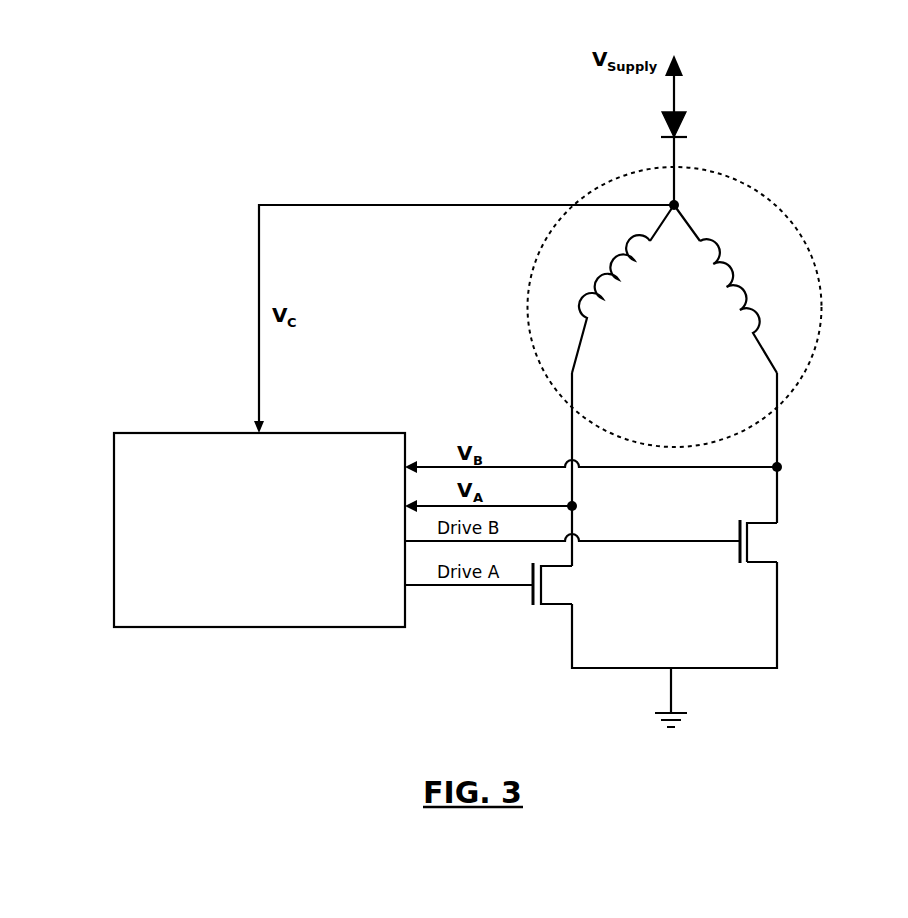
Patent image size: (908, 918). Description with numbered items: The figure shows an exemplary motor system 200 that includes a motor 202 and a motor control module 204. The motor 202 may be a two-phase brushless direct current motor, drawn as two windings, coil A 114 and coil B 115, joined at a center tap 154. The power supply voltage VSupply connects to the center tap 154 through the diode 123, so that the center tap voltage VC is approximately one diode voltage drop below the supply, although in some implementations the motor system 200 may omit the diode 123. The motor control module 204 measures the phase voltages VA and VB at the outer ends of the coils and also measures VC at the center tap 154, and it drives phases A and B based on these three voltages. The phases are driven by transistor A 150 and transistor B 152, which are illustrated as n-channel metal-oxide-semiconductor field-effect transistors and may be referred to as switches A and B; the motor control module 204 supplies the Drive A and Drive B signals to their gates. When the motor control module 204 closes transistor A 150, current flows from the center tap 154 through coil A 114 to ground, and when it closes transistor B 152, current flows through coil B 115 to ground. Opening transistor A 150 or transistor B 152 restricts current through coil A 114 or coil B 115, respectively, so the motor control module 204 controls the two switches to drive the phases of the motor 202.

The motor system 200 is at (234, 128).
The motor control module 204 is at (175, 433).
The diode 123 is at (667, 122).
The center tap 154 is at (676, 204).
The motor 202 is at (793, 214).
The coil A 114 is at (586, 316).
The coil B 115 is at (751, 298).
The transistor A 150 is at (533, 602).
The transistor B 152 is at (740, 557).